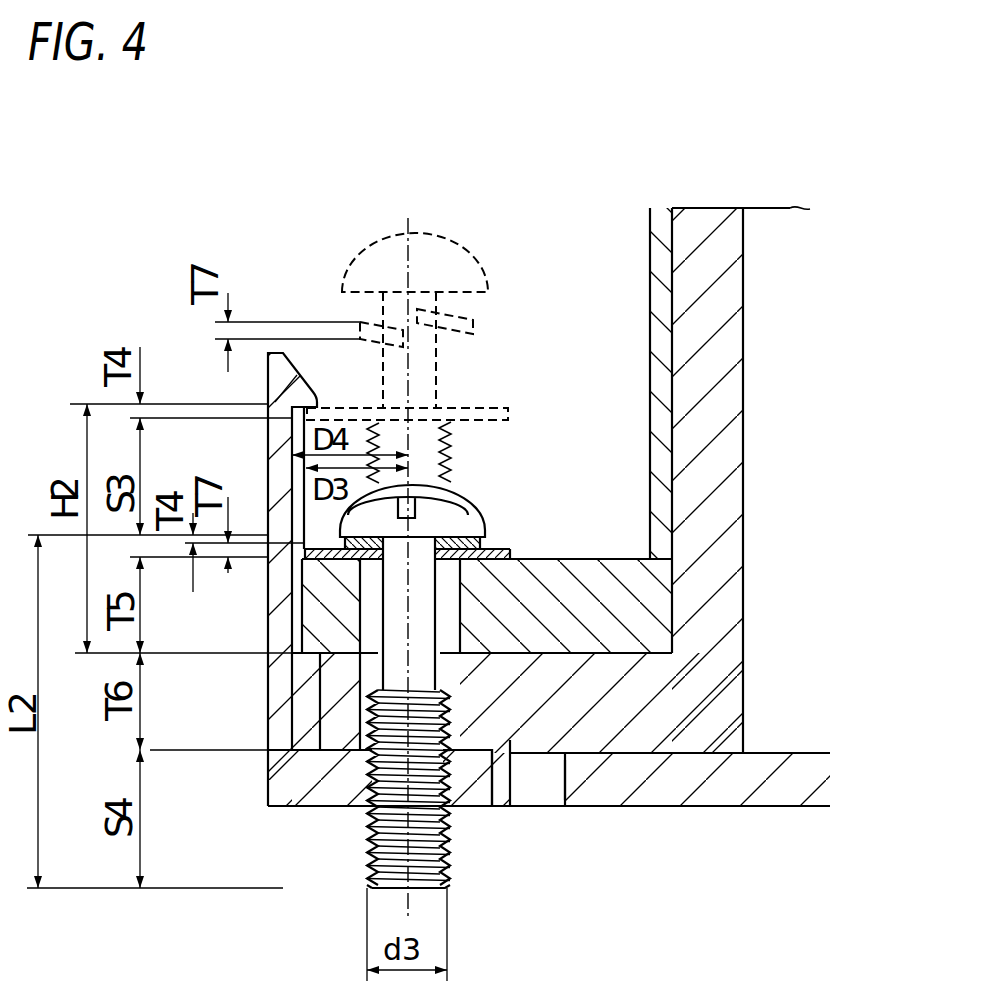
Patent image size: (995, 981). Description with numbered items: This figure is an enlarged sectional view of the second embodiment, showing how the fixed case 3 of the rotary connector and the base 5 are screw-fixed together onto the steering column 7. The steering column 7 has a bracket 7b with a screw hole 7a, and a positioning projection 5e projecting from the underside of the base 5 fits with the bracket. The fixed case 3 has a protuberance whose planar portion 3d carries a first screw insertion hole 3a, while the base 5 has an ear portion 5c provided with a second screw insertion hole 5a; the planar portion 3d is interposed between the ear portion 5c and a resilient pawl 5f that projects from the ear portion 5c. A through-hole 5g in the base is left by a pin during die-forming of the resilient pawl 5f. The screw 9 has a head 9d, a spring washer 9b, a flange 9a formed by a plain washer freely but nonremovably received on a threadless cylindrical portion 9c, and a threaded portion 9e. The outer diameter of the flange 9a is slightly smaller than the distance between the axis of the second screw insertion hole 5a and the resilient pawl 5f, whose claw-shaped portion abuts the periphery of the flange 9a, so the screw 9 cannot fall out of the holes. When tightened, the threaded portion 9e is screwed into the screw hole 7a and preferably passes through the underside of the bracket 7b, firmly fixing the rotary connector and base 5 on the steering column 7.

The fixed case 3 is at (648, 245).
The first screw insertion hole 3a is at (454, 604).
The planar portion 3d is at (653, 566).
The base 5 is at (748, 298).
The second screw insertion hole 5a is at (494, 753).
The ear portion 5c is at (578, 650).
The positioning projection 5e is at (550, 800).
The resilient pawl 5f is at (298, 360).
The through-hole 5g is at (320, 728).
The steering column 7 is at (742, 810).
The screw hole 7a is at (557, 767).
The bracket 7b is at (673, 808).
The screw 9 is at (446, 228).
The flange 9a is at (495, 409).
The spring washer 9b is at (475, 326).
The threadless cylindrical portion 9c is at (432, 362).
The head 9d is at (490, 268).
The threaded portion 9e is at (367, 855).